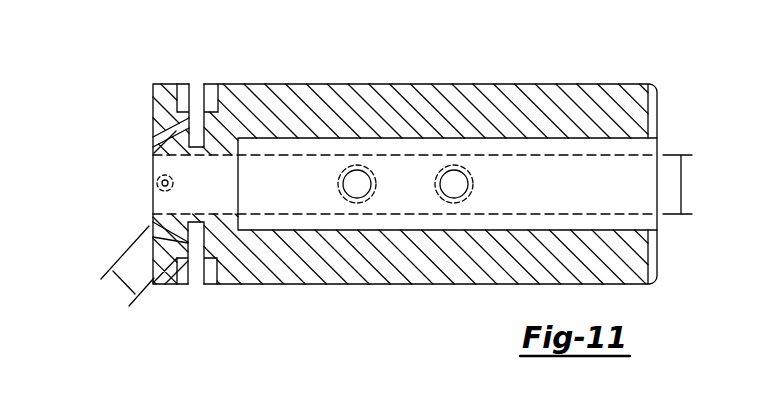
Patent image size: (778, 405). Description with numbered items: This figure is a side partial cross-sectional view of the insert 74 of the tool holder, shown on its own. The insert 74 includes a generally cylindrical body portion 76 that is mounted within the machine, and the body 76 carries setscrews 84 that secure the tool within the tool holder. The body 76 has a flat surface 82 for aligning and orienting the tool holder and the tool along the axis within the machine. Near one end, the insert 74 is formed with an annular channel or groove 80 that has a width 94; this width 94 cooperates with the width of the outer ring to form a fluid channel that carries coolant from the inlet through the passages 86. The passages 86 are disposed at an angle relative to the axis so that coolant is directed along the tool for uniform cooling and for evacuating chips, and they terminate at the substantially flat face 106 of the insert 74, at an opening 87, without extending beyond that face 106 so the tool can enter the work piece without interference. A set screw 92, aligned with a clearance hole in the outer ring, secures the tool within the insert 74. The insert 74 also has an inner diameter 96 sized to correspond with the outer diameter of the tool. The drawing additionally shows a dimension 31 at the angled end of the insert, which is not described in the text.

The insert 74 is at (520, 58).
The body portion 76 is at (352, 278).
The annular channel 80 is at (196, 287).
The flat surface 82 is at (568, 194).
The setscrews 84 is at (454, 177).
The passages 86 is at (152, 127).
The opening 87 is at (151, 220).
The set screw 92 is at (158, 184).
The width 94 is at (189, 50).
The inner diameter 96 is at (683, 187).
The face 106 is at (151, 240).
The wall thickness dimension 31 is at (124, 283).